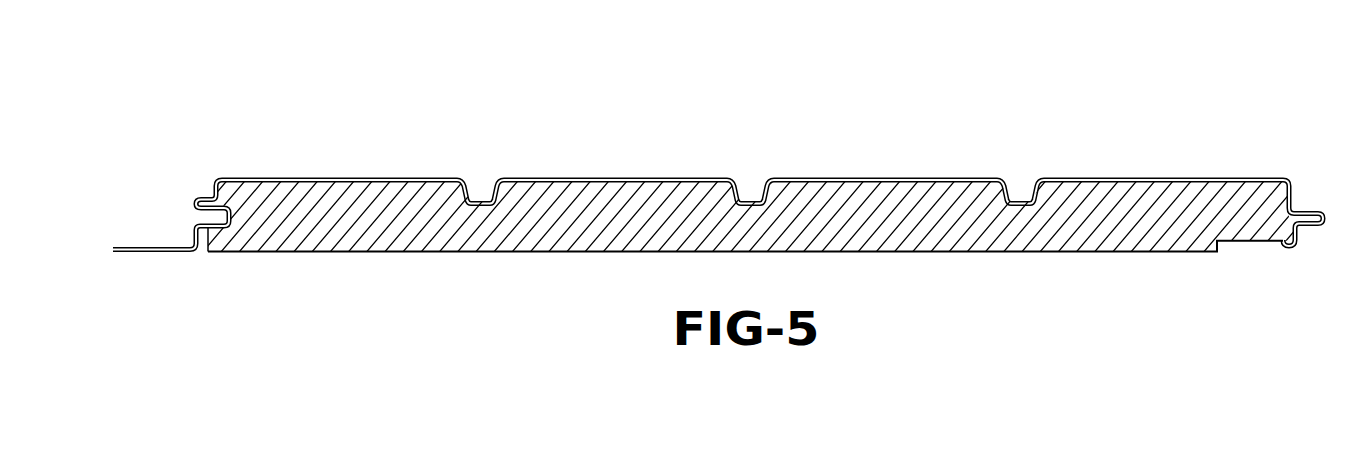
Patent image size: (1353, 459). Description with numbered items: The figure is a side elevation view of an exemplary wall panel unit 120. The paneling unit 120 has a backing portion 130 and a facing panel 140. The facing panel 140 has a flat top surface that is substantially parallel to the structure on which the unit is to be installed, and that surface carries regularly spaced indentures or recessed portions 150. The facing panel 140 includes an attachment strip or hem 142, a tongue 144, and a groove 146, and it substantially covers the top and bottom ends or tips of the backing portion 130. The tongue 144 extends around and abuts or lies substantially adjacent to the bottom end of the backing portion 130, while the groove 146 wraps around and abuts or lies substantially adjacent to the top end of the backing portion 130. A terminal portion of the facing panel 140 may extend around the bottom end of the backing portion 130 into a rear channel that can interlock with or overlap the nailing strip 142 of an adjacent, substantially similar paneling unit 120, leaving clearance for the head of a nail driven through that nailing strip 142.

The wall panel unit 120 is at (600, 133).
The backing portion 130 is at (882, 253).
The facing panel 140 is at (927, 179).
The attachment strip or hem 142 is at (143, 253).
The tongue 144 is at (1315, 211).
The groove 146 is at (199, 216).
The recessed portions 150 is at (484, 201).